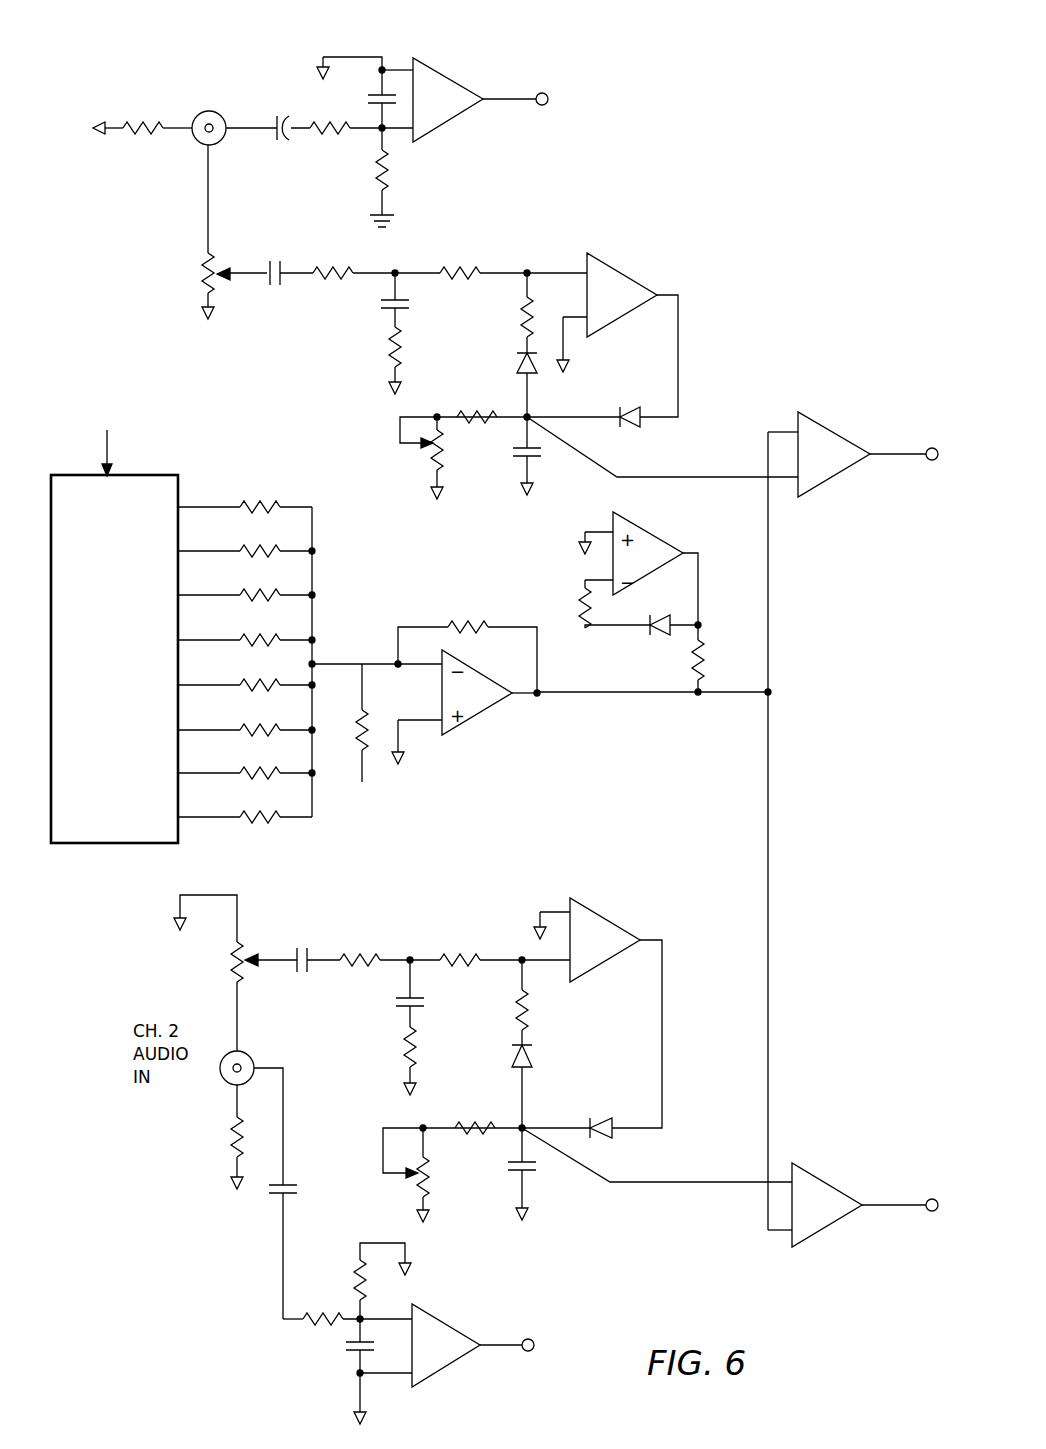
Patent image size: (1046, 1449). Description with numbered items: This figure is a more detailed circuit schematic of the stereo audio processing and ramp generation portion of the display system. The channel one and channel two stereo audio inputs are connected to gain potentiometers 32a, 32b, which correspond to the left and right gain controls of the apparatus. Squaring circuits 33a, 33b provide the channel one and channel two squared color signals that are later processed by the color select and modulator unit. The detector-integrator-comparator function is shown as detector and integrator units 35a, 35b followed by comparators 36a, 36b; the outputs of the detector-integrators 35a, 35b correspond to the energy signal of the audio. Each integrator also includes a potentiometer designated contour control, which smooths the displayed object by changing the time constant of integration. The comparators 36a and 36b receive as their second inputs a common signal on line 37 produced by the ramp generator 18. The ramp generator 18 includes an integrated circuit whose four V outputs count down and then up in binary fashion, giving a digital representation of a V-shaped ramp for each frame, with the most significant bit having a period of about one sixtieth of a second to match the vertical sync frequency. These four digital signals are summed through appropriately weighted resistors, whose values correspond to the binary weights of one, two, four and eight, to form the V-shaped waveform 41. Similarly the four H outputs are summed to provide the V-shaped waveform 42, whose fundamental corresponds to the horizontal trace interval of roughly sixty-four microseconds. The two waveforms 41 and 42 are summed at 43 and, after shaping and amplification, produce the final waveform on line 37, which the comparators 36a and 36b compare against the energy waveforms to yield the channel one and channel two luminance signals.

The ramp generator 18 is at (79, 845).
The gain potentiometer 32a is at (206, 256).
The gain potentiometer 32b is at (244, 977).
The squaring circuit 33a is at (423, 143).
The squaring circuit 33b is at (422, 1393).
The detector and integrator unit 35a is at (656, 369).
The detector and integrator unit 35b is at (637, 1010).
The comparator 36a is at (826, 430).
The comparator 36b is at (820, 1178).
The line 37 is at (746, 693).
The V-shaped waveform 41 is at (314, 648).
The V-shaped waveform 42 is at (314, 708).
The summing point 43 is at (341, 662).